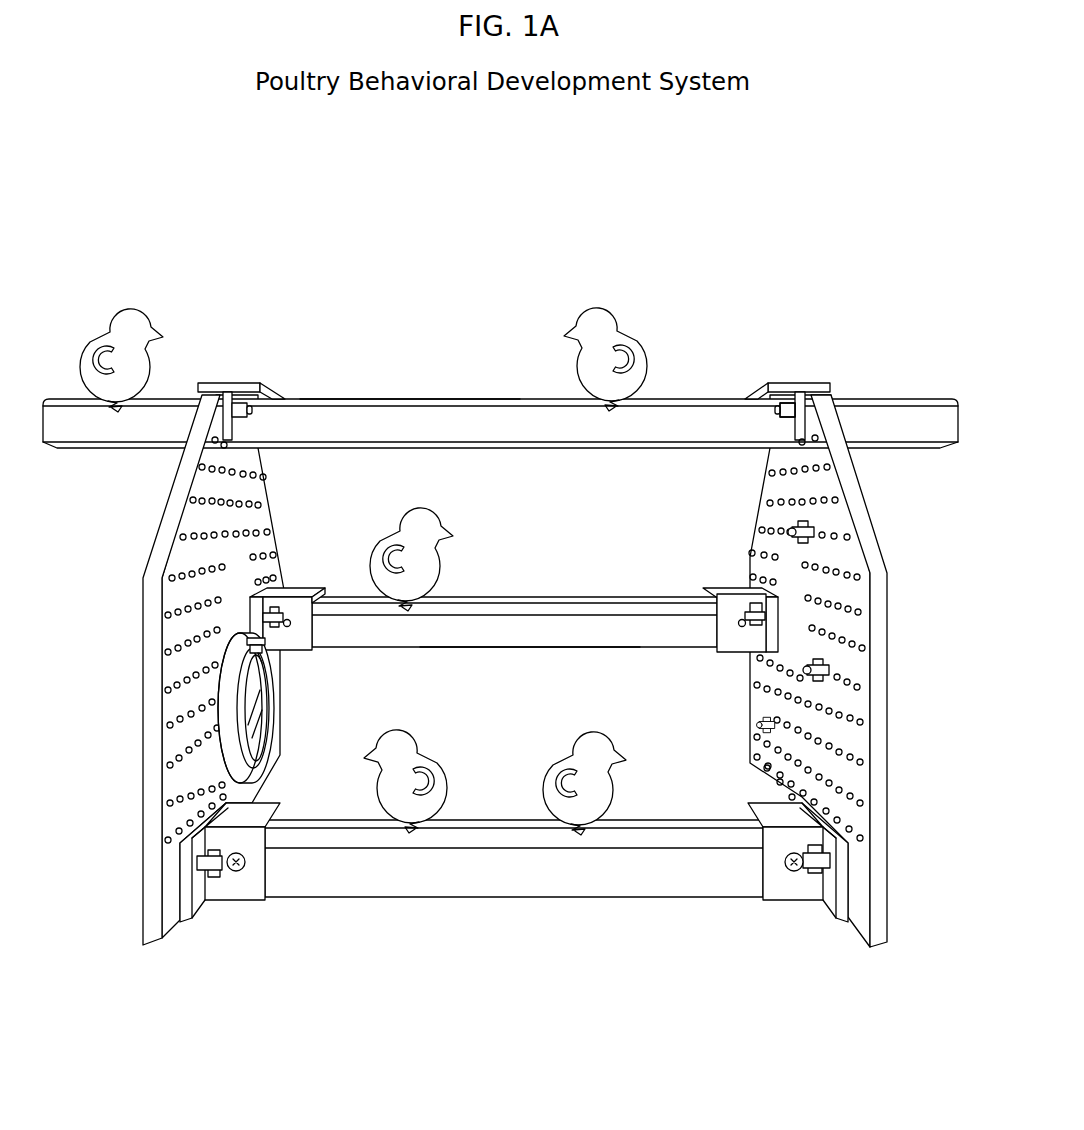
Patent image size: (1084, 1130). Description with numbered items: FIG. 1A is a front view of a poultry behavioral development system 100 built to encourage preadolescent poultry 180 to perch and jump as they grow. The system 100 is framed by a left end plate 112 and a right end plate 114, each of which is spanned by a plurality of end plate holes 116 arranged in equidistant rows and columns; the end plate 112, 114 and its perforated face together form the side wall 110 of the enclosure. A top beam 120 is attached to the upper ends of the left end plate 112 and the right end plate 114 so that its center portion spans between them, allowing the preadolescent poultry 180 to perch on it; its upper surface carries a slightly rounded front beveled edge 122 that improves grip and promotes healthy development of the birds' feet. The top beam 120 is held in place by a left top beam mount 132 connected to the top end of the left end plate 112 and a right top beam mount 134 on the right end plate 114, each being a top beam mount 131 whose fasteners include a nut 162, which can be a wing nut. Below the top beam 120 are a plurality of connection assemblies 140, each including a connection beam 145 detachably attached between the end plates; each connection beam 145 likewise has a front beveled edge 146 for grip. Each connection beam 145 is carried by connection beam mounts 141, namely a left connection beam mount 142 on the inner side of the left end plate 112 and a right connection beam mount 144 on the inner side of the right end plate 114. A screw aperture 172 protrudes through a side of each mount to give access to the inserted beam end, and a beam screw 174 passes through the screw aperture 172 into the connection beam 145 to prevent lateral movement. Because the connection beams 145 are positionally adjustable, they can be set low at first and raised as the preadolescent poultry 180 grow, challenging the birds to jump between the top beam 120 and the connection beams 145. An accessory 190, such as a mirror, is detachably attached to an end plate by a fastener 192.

The poultry behavioral development system 100 is at (148, 246).
The first side panel 110 is at (148, 648).
The left end plate 112 is at (150, 552).
The right end plate 114 is at (868, 523).
The end plate holes 116 is at (190, 758).
The top beam 120 is at (886, 399).
The front beveled edge 122 is at (430, 399).
The top beam mount 131 is at (270, 399).
The left top beam mount 132 is at (226, 384).
The right top beam mount 134 is at (782, 384).
The connection assembly 140 is at (624, 547).
The connection beam mount 141 is at (226, 906).
The left connection beam mount 142 is at (299, 592).
The right connection beam mount 144 is at (721, 590).
The connection beam 145 is at (485, 598).
The front beveled edge 146 is at (535, 612).
The nut 162 is at (775, 412).
The screw aperture 172 is at (290, 625).
The beam screw 174 is at (250, 863).
The preadolescent poultry 180 is at (633, 333).
The accessory 190 is at (270, 735).
The fastener 192 is at (263, 664).